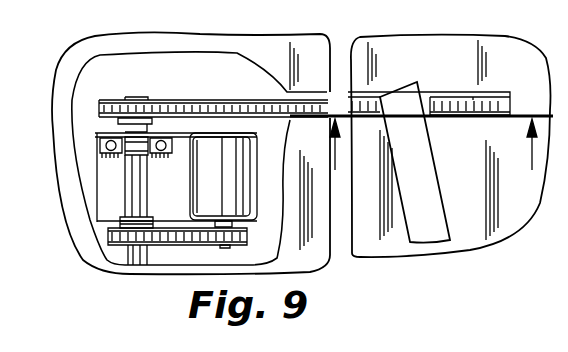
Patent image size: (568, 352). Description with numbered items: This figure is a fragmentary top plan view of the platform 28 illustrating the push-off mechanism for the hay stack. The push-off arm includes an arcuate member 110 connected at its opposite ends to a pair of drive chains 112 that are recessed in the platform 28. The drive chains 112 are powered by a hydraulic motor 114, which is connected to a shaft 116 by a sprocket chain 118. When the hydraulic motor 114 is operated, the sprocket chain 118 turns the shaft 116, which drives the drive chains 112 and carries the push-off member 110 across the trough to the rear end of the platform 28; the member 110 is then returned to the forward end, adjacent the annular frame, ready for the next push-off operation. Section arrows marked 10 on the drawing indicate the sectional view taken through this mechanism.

The platform 28 is at (447, 43).
The drive chains 112 is at (235, 100).
The arcuate member 110 is at (430, 172).
The shaft 116 is at (147, 163).
The hydraulic motor 114 is at (250, 205).
The sprocket chain 118 is at (183, 246).
The section line 10 is at (429, 153).